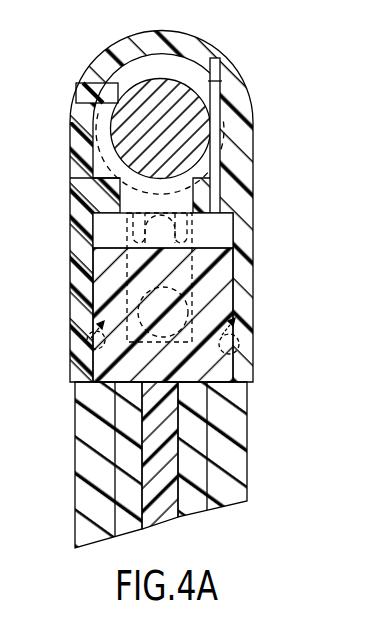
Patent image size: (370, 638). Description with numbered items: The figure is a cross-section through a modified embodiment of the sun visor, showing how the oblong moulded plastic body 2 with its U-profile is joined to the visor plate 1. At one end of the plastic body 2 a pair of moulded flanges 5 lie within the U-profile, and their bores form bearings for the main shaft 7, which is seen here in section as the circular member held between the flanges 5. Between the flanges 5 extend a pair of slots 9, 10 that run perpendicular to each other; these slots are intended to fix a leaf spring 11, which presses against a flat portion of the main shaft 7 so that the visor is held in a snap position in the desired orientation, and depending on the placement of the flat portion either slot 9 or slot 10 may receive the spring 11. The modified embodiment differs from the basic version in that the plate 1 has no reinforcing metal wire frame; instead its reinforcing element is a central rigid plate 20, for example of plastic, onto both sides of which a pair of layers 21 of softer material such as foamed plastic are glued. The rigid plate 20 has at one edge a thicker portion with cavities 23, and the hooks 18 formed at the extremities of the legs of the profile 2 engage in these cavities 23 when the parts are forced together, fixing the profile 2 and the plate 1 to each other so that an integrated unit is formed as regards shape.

The plate 1 is at (258, 388).
The plastic body 2 is at (170, 206).
The moulded flanges 5 is at (87, 150).
The main shaft 7 is at (122, 122).
The slot 9 is at (88, 77).
The slot 10 is at (214, 57).
The leaf spring 11 is at (222, 81).
The hooks 18 is at (86, 313).
The rigid plate 20 is at (173, 523).
The layers of softer material 21 is at (74, 442).
The cavities 23 is at (90, 346).